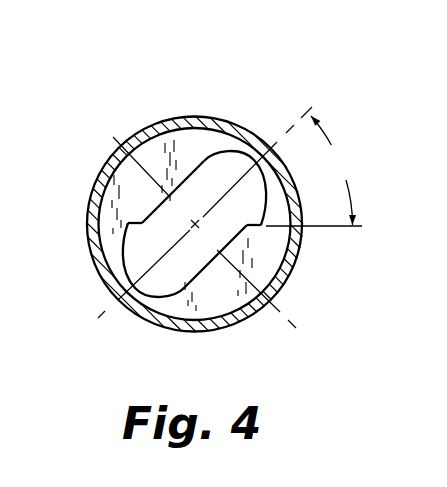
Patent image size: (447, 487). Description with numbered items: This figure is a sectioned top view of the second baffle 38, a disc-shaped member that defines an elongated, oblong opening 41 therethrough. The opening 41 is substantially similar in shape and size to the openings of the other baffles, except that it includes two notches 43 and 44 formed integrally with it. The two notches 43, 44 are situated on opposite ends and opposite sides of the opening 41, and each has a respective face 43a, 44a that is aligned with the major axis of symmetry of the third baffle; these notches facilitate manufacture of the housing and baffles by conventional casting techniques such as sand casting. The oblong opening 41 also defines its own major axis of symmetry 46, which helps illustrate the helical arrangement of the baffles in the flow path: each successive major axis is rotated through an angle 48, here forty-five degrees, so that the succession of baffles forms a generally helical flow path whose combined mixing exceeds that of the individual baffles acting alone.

The baffle 38 is at (134, 312).
The oblong opening 41 is at (212, 166).
The notch 43 is at (260, 227).
The face 43a is at (259, 225).
The notch 44 is at (129, 223).
The face 44a is at (142, 226).
The major axis of symmetry 46 is at (281, 144).
The angle 48 is at (328, 137).